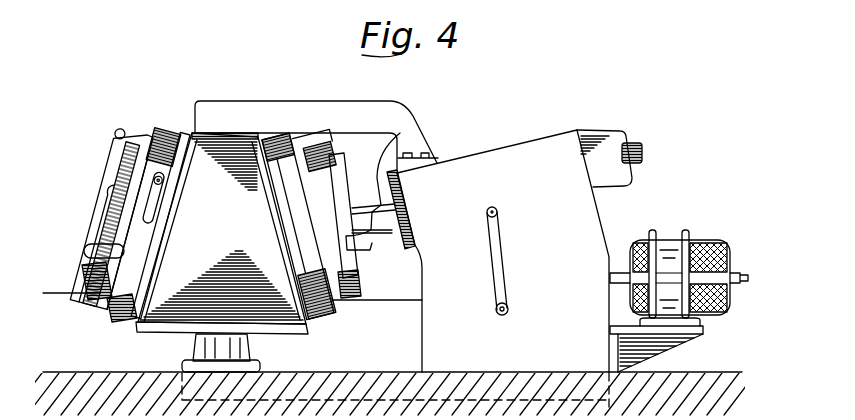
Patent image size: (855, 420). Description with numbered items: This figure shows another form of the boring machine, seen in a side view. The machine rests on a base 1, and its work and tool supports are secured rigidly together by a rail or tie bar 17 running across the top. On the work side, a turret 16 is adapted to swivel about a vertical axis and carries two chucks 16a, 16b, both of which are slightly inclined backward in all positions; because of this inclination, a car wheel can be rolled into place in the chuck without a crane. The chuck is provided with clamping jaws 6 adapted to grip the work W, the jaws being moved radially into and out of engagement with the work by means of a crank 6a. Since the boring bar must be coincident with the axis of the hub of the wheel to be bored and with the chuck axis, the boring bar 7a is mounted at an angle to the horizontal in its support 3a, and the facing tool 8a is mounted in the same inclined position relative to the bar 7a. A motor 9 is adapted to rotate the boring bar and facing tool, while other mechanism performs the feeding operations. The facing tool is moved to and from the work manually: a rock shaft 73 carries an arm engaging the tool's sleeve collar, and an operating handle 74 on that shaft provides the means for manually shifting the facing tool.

The base 1 is at (676, 388).
The support 3a is at (562, 150).
The clamping jaws 6 is at (105, 262).
The crank 6a is at (155, 198).
The boring bar 7a is at (400, 133).
The facing tool 8a is at (400, 238).
The motor 9 is at (680, 238).
The turret 16 is at (203, 165).
The chuck 16a is at (323, 318).
The chuck 16b is at (117, 310).
The rail or tie bar 17 is at (302, 125).
The rock shaft 73 is at (503, 312).
The operating handle 74 is at (495, 252).
The work W is at (322, 190).